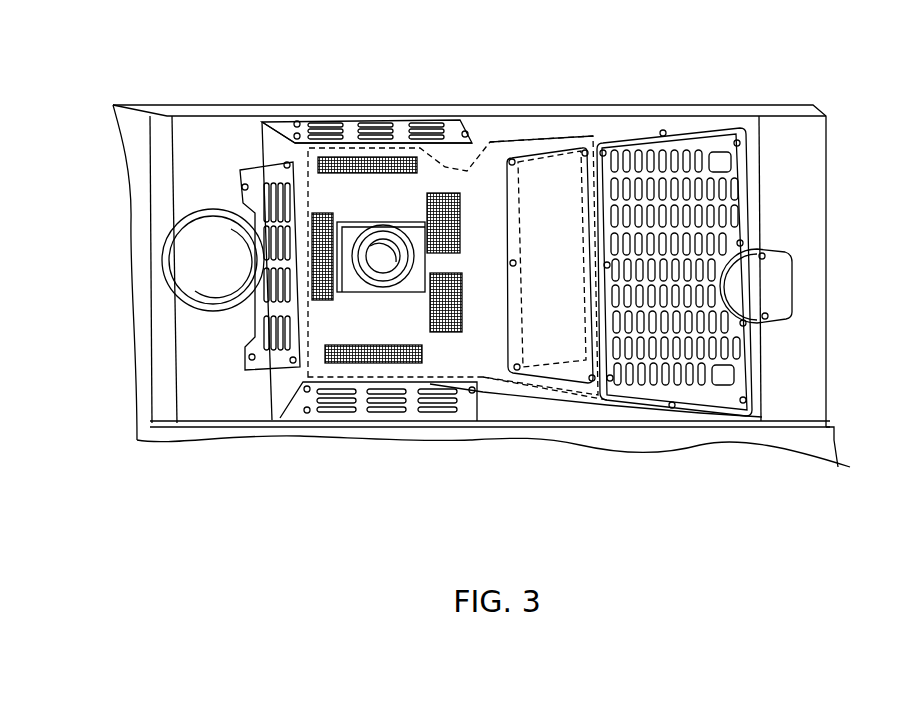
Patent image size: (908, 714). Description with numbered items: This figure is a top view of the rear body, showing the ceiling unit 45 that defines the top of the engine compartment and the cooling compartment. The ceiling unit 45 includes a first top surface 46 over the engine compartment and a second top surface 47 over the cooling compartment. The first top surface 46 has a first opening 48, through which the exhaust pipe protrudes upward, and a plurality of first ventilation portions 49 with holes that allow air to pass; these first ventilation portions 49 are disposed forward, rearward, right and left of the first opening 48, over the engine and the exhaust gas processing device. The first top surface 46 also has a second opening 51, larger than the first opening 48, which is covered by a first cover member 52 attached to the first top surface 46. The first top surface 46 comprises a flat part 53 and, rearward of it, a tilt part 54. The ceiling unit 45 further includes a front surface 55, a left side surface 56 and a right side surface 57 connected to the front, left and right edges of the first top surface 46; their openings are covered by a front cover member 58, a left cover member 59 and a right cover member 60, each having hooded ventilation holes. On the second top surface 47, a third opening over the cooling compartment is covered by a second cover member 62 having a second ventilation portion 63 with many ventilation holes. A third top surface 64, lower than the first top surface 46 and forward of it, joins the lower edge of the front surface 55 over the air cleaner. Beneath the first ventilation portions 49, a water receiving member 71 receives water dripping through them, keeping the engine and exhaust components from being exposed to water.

The ceiling unit 45 is at (246, 80).
The first top surface 46 is at (434, 172).
The second top surface 47 is at (644, 137).
The first opening 48 is at (358, 246).
The first ventilation portions 49 is at (377, 157).
The second opening 51 is at (580, 337).
The first cover member 52 is at (547, 177).
The flat part 53 is at (347, 190).
The tilt part 54 is at (498, 290).
The front surface 55 is at (267, 150).
The left side surface 56 is at (520, 407).
The right side surface 57 is at (482, 141).
The front cover member 58 is at (267, 180).
The left cover member 59 is at (333, 422).
The right cover member 60 is at (352, 128).
The second cover member 62 is at (707, 142).
The second ventilation portion 63 is at (733, 200).
The third top surface 64 is at (203, 437).
The water receiving member 71 is at (257, 320).